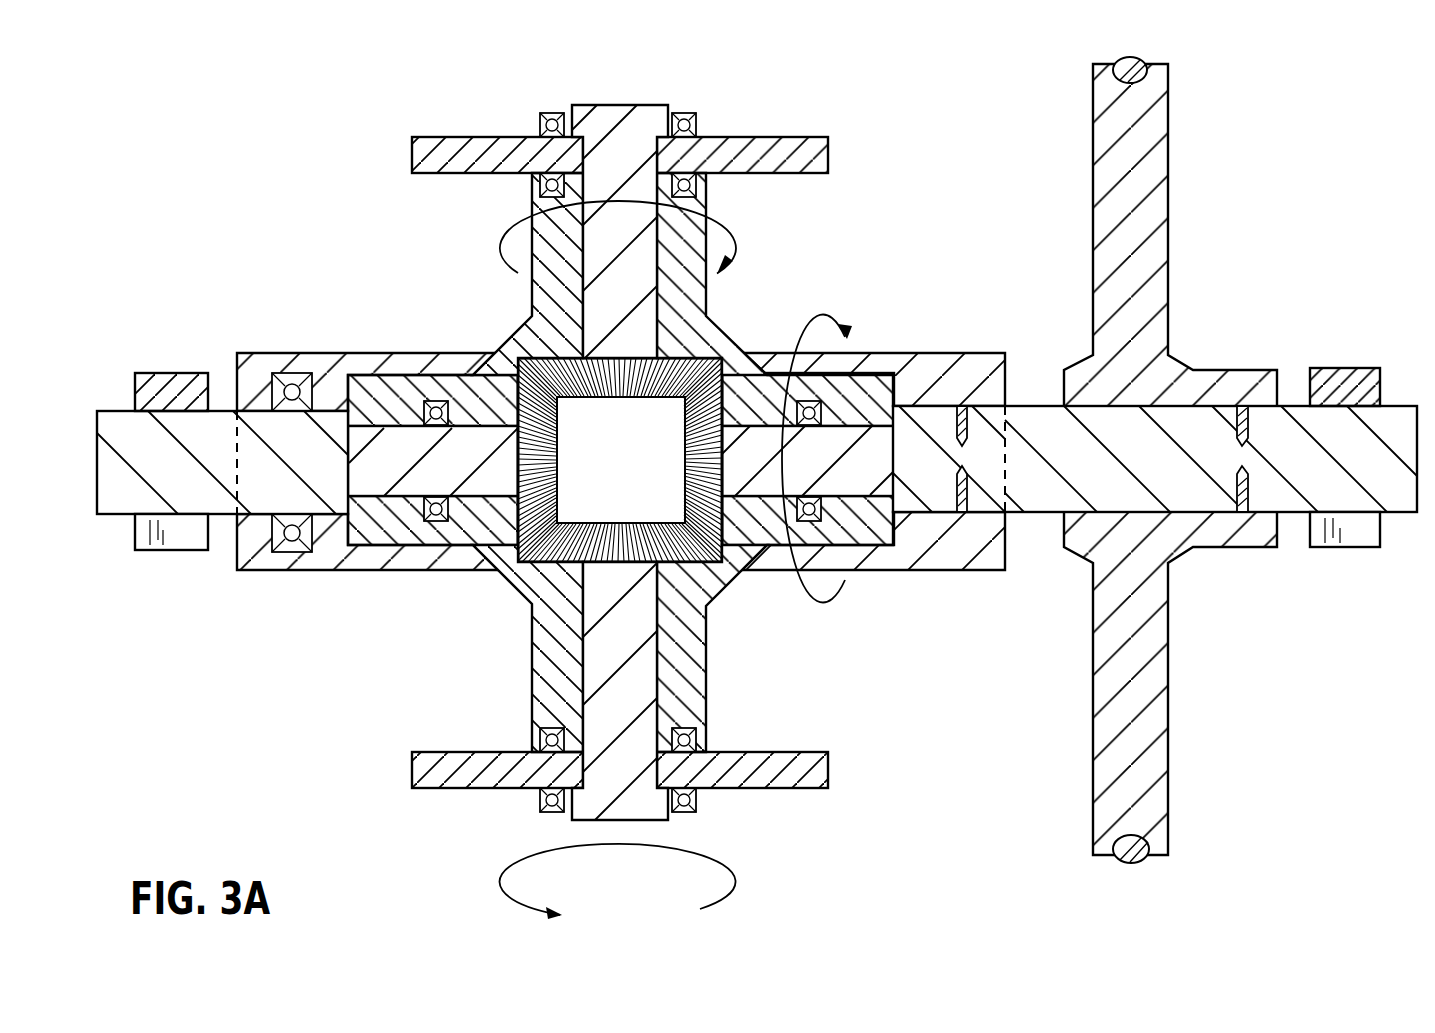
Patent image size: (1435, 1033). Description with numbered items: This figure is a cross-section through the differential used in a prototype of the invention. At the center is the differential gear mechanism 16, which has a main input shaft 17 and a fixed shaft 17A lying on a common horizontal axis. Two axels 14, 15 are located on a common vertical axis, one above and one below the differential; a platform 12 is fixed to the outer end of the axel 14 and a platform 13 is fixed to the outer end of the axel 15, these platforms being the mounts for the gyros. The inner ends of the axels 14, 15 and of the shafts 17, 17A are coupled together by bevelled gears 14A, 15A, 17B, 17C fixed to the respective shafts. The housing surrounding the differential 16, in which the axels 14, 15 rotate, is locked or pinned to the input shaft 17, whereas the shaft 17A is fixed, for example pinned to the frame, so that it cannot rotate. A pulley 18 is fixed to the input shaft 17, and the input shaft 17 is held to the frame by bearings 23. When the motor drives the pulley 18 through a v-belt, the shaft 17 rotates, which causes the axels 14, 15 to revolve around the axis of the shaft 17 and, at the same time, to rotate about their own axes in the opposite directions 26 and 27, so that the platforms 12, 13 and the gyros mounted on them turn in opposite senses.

The platform 12 is at (788, 133).
The platform 13 is at (830, 770).
The axel 14 is at (640, 307).
The bevelled gear 14A is at (522, 335).
The axel 15 is at (642, 690).
The bevelled gear 15A is at (713, 595).
The differential gear mechanism 16 is at (363, 271).
The main input shaft 17 is at (1035, 370).
The fixed shaft 17A is at (117, 410).
The bevelled gear 17B is at (767, 567).
The bevelled gear 17C is at (497, 548).
The pulley 18 is at (1093, 140).
The bearings 23 is at (187, 372).
The direction of rotation 26 is at (737, 233).
The direction of rotation 27 is at (737, 880).